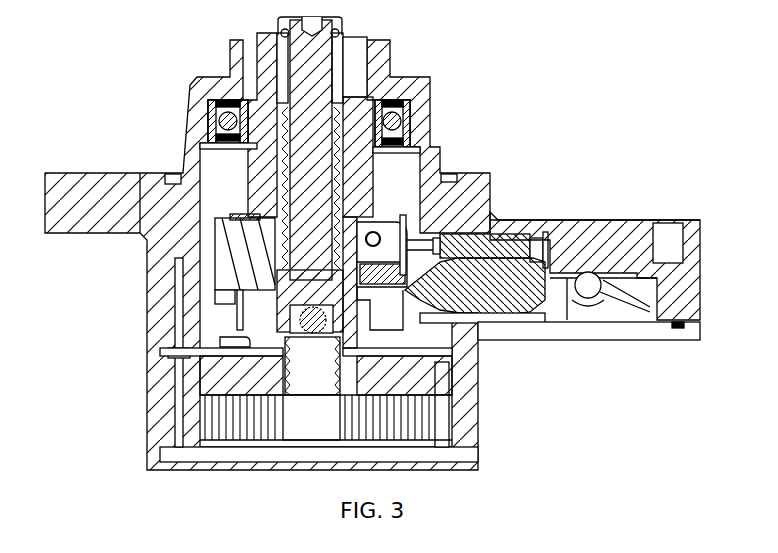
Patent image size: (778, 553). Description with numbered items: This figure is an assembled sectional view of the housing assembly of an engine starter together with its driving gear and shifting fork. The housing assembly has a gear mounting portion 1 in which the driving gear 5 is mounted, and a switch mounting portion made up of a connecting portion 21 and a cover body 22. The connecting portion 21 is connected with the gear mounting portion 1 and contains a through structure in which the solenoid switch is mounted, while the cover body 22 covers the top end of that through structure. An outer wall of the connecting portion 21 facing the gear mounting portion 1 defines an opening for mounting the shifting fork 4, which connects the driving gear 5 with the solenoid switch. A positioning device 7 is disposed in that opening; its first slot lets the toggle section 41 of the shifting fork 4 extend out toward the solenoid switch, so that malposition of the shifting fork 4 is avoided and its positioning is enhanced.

The gear mounting portion 1 is at (147, 313).
The shifting fork 4 is at (502, 318).
The driving gear 5 is at (220, 215).
The positioning device 7 is at (493, 228).
The connecting portion 21 is at (630, 335).
The cover body 22 is at (613, 230).
The toggle section 41 is at (590, 298).